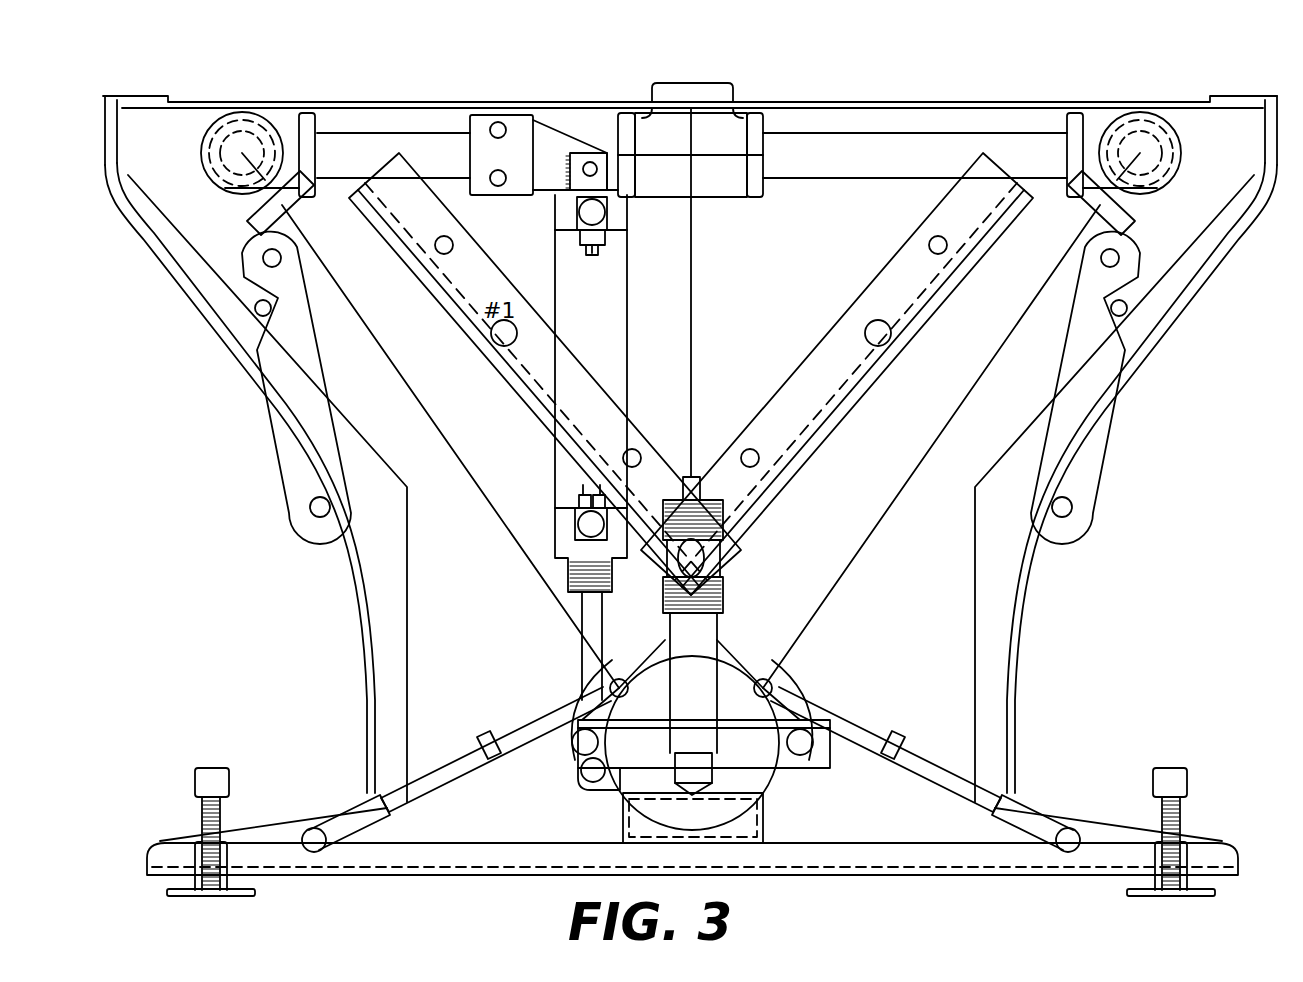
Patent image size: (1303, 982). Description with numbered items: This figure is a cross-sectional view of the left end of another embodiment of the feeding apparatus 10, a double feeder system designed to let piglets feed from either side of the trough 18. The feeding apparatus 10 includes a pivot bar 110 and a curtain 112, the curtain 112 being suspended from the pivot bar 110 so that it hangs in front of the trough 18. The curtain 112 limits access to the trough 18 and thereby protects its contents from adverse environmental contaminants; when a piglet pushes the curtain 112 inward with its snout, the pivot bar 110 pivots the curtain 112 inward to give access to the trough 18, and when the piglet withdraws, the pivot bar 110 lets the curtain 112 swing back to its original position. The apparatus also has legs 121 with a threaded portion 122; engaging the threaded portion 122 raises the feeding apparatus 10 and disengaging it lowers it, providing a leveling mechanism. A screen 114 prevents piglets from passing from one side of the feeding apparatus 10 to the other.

The feeding apparatus 10 is at (687, 74).
The trough 18 is at (820, 683).
The pivot bar 110 is at (1125, 418).
The curtain 112 is at (1025, 612).
The screen 114 is at (823, 450).
The legs 121 is at (1200, 762).
The threaded portion 122 is at (1185, 818).